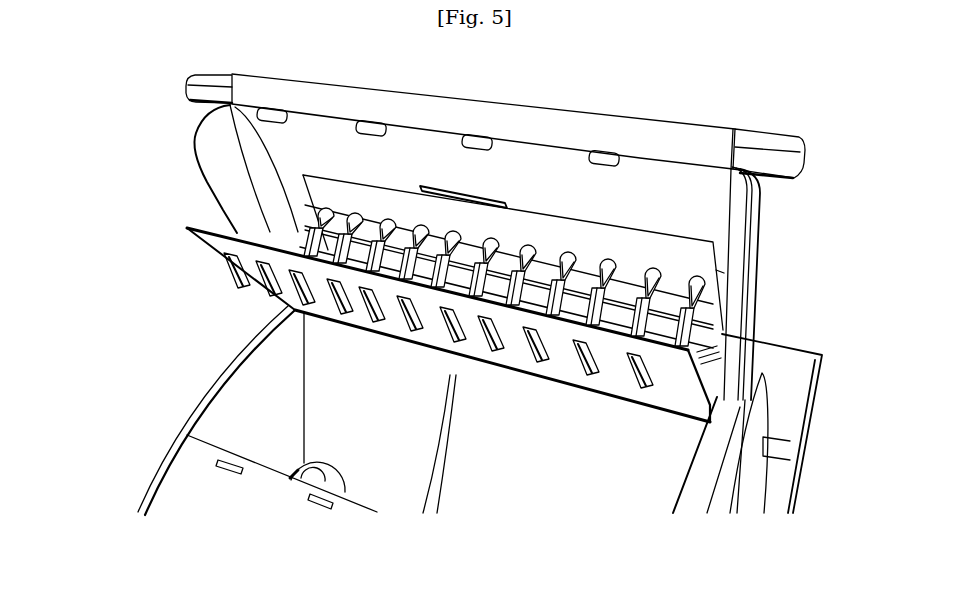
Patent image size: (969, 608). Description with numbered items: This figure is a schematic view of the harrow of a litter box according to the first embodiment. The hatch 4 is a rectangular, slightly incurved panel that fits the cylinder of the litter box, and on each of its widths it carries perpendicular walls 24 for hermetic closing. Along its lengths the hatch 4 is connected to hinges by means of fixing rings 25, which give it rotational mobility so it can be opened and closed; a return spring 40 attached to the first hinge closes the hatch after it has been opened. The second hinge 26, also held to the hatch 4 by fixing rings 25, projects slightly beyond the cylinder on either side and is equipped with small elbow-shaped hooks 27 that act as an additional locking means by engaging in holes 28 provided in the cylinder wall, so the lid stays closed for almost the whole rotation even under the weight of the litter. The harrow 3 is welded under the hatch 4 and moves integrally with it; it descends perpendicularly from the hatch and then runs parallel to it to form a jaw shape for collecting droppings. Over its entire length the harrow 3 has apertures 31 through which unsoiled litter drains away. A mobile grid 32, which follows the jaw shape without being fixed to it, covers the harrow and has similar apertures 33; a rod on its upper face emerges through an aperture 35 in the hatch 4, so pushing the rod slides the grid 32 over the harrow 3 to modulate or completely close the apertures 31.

The harrow 3 is at (289, 309).
The hatch 4 is at (757, 263).
The perpendicular walls 24 is at (203, 173).
The fixing rings 25 is at (393, 91).
The second hinge 26 is at (187, 77).
The small hooks 27 is at (262, 122).
The holes 28 is at (218, 462).
The apertures 31 is at (243, 282).
The grid 32 is at (757, 293).
The apertures of the grid 33 is at (712, 326).
The aperture 35 is at (410, 192).
The return spring 40 is at (708, 408).